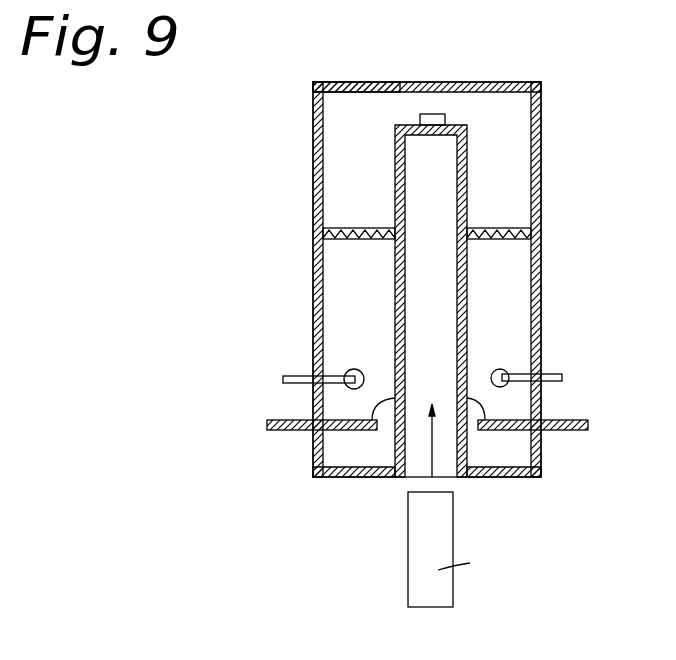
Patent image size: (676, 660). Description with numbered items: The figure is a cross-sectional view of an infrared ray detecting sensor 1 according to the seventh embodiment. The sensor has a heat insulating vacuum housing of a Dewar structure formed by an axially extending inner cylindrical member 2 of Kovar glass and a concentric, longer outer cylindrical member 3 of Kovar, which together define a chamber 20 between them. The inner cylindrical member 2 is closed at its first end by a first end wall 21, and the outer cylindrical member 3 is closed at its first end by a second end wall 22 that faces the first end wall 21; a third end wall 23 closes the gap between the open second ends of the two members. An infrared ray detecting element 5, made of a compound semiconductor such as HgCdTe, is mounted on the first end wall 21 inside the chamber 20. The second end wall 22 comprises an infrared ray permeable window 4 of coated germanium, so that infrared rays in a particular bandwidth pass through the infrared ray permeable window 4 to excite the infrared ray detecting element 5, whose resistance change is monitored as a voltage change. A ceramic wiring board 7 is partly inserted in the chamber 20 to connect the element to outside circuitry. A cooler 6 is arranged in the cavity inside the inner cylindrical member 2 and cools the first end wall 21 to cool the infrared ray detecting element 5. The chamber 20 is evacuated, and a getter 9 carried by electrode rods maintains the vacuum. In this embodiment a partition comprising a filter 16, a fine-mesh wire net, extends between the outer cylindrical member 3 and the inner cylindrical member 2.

The infrared ray detecting sensor 1 is at (563, 87).
The inner cylindrical member 2 is at (470, 207).
The outer cylindrical member 3 is at (539, 145).
The infrared ray permeable window 4 is at (488, 81).
The infrared ray detecting element 5 is at (437, 113).
The cooler 6 is at (408, 525).
The ceramic wiring board 7 is at (558, 418).
The getter 9 is at (503, 369).
The filter 16 is at (356, 228).
The chamber 20 is at (522, 167).
The first end wall 21 is at (406, 123).
The second end wall 22 is at (337, 82).
The third end wall 23 is at (331, 478).